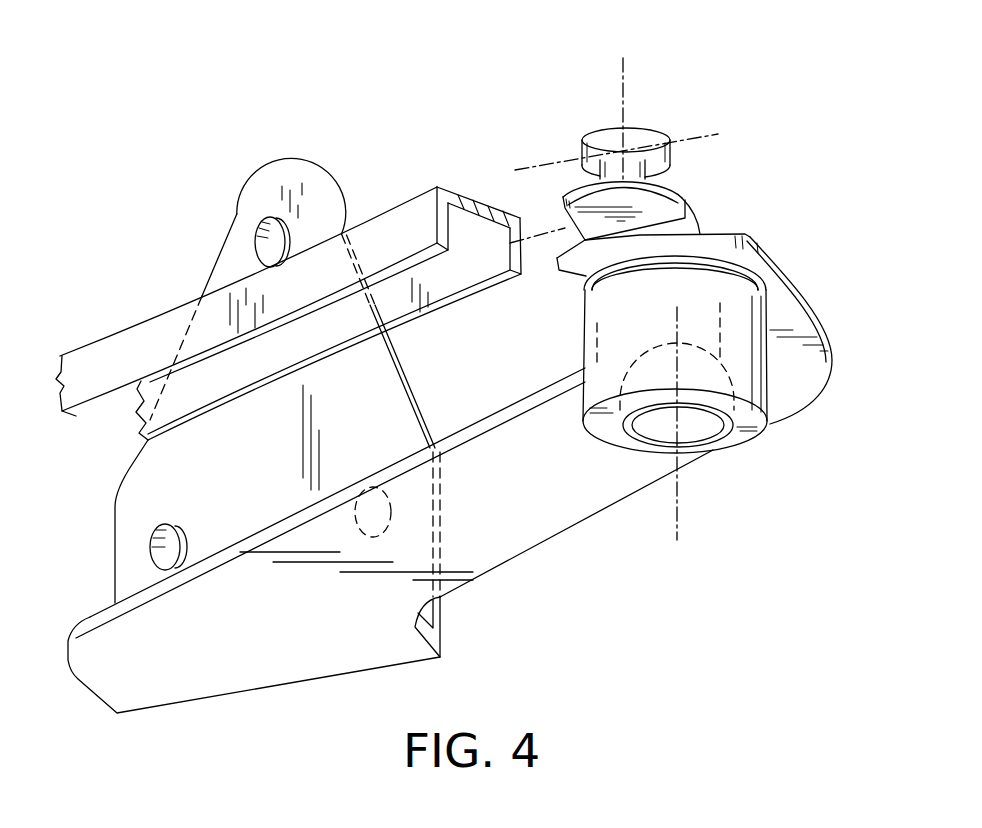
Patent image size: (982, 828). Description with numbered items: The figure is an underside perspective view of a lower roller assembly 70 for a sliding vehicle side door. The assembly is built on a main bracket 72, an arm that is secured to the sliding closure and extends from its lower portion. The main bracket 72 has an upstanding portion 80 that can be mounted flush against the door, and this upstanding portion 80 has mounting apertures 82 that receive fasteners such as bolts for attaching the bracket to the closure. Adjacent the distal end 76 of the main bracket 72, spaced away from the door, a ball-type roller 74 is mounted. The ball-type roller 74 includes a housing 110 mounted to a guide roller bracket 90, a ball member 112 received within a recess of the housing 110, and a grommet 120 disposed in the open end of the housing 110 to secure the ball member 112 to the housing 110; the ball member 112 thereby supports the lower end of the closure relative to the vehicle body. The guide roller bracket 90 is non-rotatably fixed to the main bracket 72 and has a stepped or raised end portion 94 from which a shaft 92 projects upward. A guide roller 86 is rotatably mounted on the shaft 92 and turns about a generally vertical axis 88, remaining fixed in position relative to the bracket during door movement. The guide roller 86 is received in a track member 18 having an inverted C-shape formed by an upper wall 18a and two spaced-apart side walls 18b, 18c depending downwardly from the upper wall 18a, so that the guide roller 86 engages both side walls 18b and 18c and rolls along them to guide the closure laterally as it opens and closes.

The track member 18 is at (131, 322).
The upper wall 18a is at (472, 203).
The side wall 18b is at (437, 221).
The side wall 18c is at (505, 250).
The roller assembly 70 is at (680, 448).
The main bracket 72 is at (496, 570).
The ball-type roller 74 is at (770, 397).
The distal end 76 is at (787, 293).
The upstanding portion 80 is at (318, 222).
The mounting apertures 82 is at (272, 236).
The guide roller 86 is at (638, 135).
The vertical axis 88 is at (623, 78).
The guide roller bracket 90 is at (691, 199).
The shaft 92 is at (645, 160).
The end portion 94 is at (582, 192).
The housing 110 is at (586, 385).
The ball member 112 is at (690, 445).
The grommet 120 is at (725, 430).